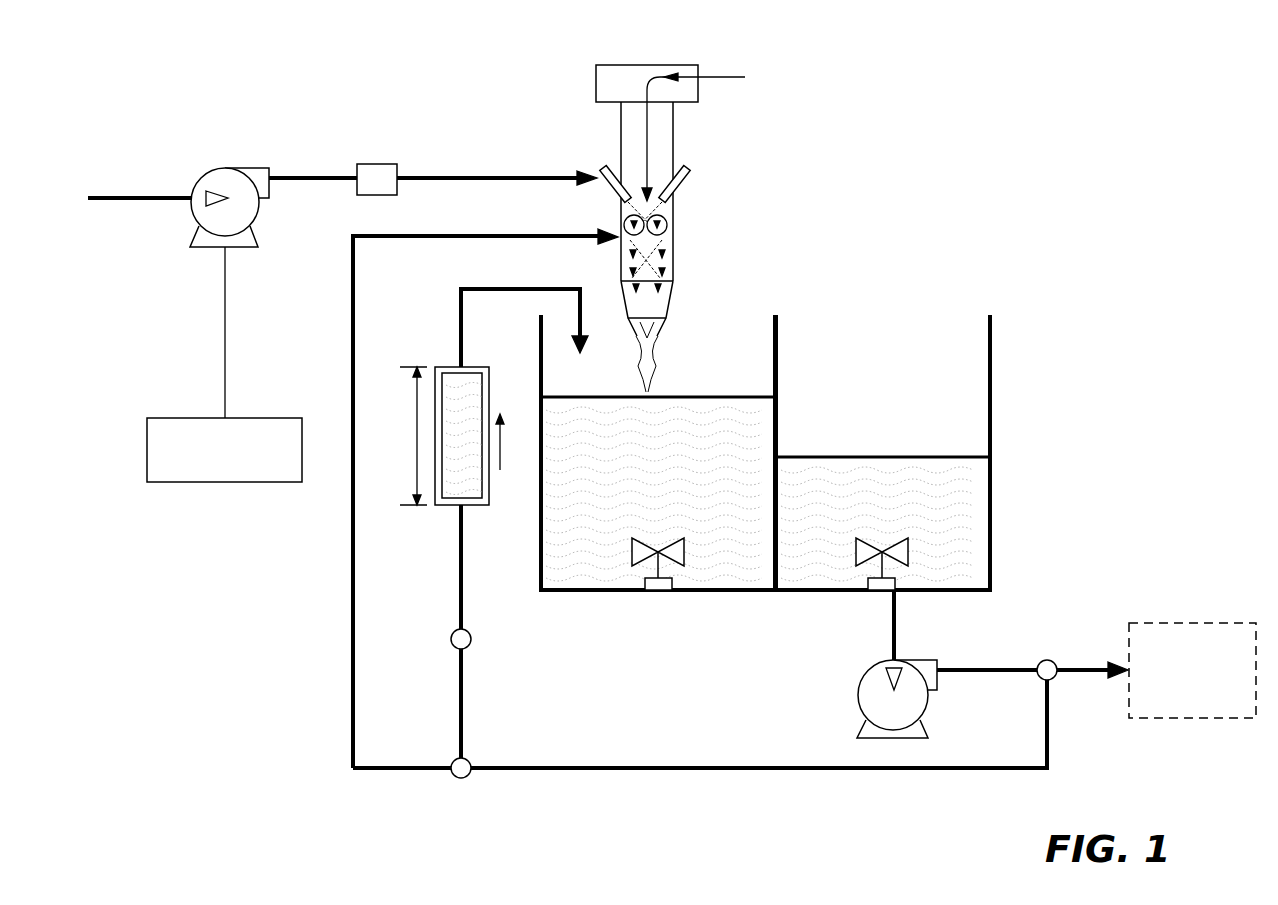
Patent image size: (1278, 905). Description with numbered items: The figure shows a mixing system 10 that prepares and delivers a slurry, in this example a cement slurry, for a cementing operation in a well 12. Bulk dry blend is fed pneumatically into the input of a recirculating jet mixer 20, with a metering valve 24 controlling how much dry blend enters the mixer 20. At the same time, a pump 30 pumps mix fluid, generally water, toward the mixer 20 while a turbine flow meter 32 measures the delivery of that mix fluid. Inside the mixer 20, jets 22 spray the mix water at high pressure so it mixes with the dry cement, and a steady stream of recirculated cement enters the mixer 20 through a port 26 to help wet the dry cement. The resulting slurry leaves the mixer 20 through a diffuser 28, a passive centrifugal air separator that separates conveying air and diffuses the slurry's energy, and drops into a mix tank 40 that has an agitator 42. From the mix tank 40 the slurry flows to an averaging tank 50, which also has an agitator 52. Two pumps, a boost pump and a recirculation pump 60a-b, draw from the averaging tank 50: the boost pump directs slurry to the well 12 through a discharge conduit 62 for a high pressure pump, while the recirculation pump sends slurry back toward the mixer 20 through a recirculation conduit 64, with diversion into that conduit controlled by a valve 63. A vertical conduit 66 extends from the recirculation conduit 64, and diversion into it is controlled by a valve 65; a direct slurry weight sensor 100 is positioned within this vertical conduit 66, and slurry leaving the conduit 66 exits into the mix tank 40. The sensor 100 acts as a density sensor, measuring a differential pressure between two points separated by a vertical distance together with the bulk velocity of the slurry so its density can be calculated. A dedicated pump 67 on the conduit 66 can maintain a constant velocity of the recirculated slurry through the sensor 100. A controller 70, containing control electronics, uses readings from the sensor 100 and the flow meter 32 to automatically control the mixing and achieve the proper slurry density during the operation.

The mixing system 10 is at (216, 86).
The well 12 is at (1220, 623).
The recirculating jet mixer 20 is at (673, 221).
The jets 22 is at (691, 172).
The metering valve 24 is at (596, 72).
The port 26 is at (620, 222).
The diffuser 28 is at (676, 306).
The pump 30 is at (200, 248).
The turbine flow meter 32 is at (366, 164).
The mix tank 40 is at (568, 592).
The agitator 42 is at (655, 592).
The averaging tank 50 is at (793, 592).
The agitator 52 is at (880, 592).
The boost pump and recirculation pump 60a-b is at (859, 688).
The discharge conduit 62 is at (968, 670).
The valve 63 is at (1052, 660).
The recirculation conduit 64 is at (665, 768).
The valve 65 is at (469, 759).
The vertical conduit 66 is at (465, 690).
The dedicated pump 67 is at (451, 640).
The controller 70 is at (190, 483).
The direct slurry weight sensor 100 is at (447, 506).